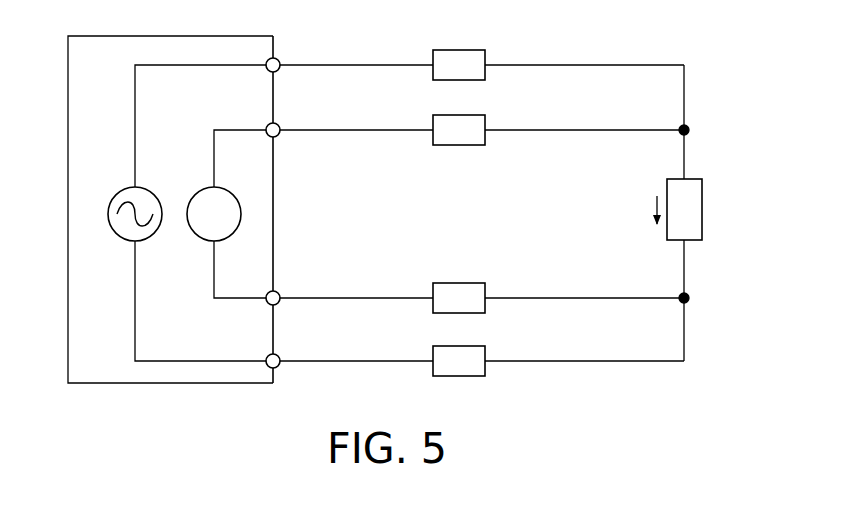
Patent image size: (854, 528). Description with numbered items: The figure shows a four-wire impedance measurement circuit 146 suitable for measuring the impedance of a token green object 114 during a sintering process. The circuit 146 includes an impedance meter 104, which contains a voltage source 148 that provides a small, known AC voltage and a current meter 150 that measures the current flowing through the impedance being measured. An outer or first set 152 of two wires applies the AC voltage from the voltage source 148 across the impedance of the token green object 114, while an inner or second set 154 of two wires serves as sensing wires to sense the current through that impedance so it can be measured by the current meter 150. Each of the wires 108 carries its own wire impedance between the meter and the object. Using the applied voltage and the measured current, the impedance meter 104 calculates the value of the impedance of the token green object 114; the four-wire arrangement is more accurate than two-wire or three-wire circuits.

The 4-wire impedance measurement circuit 146 is at (70, 20).
The impedance meter 104 is at (115, 384).
The voltage source 148 is at (127, 238).
The current meter 150 is at (206, 238).
The conductors 108 is at (362, 67).
The first set of two wires 152 is at (583, 65).
The second set of two wires 154 is at (583, 130).
The token green object 114 is at (710, 178).